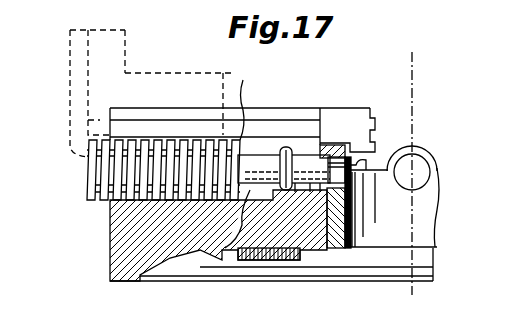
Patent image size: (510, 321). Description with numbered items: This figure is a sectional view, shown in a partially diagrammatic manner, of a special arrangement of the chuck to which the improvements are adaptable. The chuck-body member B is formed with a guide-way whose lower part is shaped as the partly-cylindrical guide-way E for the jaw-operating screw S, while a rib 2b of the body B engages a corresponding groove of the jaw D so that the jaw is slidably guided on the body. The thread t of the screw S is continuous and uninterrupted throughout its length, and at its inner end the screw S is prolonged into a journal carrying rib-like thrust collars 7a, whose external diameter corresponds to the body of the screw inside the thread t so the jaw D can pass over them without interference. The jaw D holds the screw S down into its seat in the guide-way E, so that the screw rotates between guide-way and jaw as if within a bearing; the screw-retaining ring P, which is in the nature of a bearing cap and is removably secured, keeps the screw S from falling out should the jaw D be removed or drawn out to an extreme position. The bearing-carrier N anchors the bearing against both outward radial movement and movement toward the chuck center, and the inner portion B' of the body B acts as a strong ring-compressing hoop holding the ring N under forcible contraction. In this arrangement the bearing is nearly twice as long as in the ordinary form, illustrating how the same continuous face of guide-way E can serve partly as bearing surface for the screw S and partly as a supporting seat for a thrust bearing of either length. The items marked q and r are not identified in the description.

The jaw D is at (153, 73).
The thrust collar 7a is at (286, 147).
The rib 2b is at (375, 128).
The lug q is at (372, 158).
The axis line r is at (414, 112).
The screw-retaining ring P is at (420, 147).
The thread t is at (88, 190).
The jaw-operating screw S is at (108, 200).
The chuck-body member B is at (218, 247).
The guide-way for the jaw-operating screw E is at (223, 261).
The inner portion of the body B' is at (272, 247).
The bearing-carrier N is at (336, 235).